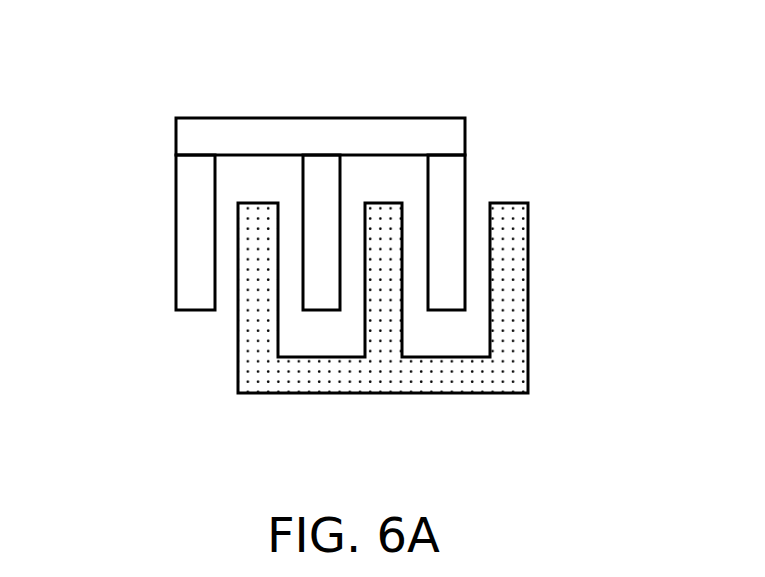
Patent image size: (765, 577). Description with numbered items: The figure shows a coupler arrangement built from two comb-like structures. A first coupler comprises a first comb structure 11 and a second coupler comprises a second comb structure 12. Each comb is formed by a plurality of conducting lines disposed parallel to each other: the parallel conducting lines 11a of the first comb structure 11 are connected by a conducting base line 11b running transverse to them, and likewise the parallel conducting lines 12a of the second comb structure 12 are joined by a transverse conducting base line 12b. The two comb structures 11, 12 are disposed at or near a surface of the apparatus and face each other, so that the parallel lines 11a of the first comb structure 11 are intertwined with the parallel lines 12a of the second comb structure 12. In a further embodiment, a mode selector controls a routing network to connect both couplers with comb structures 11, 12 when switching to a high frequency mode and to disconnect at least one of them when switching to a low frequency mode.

The first comb structure 11 is at (110, 75).
The parallel conducting lines of the first comb structure 11a is at (322, 188).
The conducting base line of the first comb structure 11b is at (326, 135).
The second comb structure 12 is at (592, 385).
The parallel conducting lines of the second comb structure 12a is at (382, 328).
The conducting base line of the second comb structure 12b is at (372, 386).